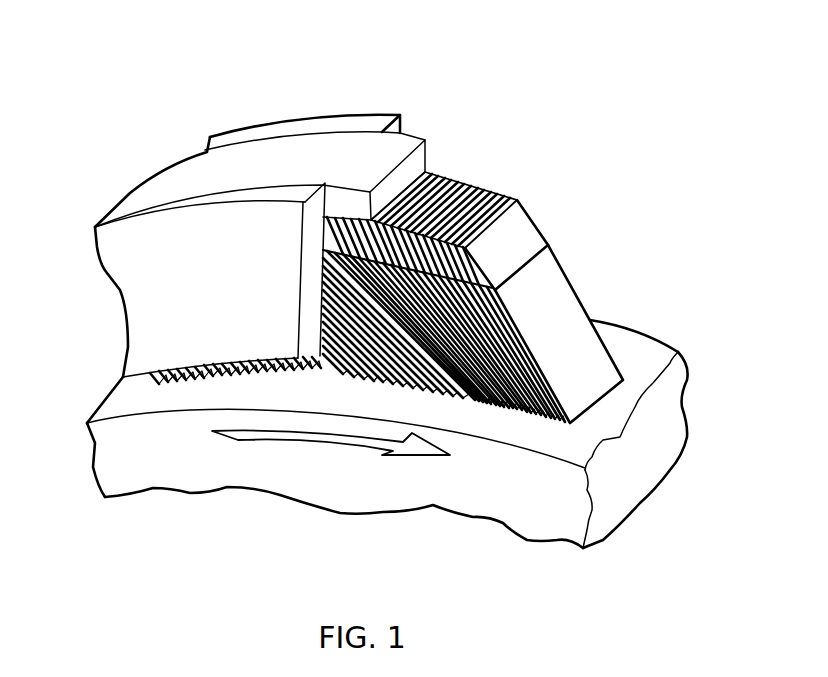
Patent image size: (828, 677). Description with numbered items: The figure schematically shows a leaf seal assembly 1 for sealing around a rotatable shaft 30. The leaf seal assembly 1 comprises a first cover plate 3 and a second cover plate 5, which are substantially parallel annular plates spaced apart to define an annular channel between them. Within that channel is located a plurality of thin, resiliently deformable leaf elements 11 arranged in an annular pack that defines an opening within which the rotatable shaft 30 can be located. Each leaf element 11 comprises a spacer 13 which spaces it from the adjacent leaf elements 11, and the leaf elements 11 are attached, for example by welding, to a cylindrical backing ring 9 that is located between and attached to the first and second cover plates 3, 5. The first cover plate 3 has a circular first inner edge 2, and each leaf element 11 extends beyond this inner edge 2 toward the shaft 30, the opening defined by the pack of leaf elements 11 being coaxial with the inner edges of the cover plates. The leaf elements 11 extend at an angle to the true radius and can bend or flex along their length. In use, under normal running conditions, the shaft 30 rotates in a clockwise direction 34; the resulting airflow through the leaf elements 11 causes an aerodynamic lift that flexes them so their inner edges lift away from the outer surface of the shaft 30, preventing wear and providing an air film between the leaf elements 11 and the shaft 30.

The leaf seal assembly 1 is at (483, 113).
The first inner edge 2 is at (145, 378).
The first cover plate 3 is at (247, 276).
The second cover plate 5 is at (337, 122).
The backing ring 9 is at (207, 168).
The leaf element 11 is at (557, 293).
The spacer 13 is at (517, 197).
The rotatable shaft 30 is at (530, 433).
The clockwise direction 34 is at (260, 440).